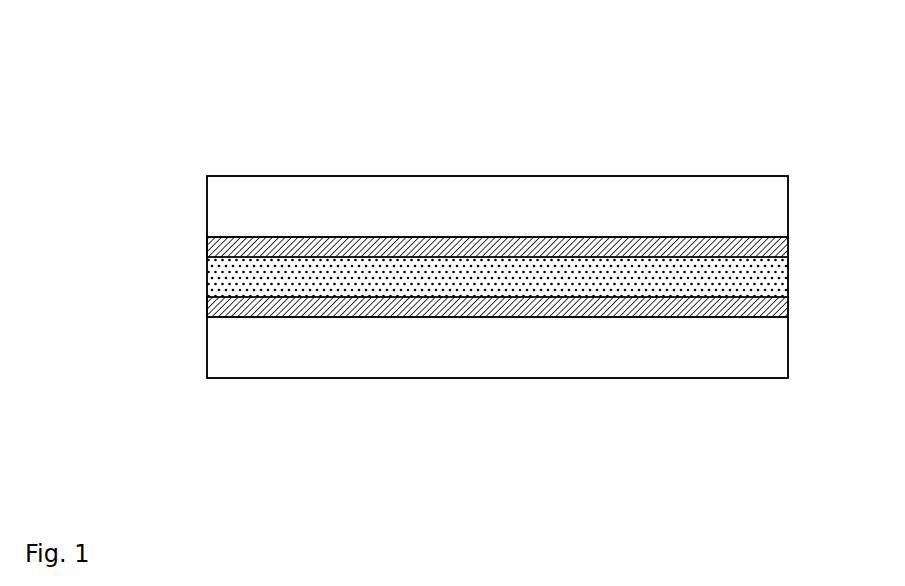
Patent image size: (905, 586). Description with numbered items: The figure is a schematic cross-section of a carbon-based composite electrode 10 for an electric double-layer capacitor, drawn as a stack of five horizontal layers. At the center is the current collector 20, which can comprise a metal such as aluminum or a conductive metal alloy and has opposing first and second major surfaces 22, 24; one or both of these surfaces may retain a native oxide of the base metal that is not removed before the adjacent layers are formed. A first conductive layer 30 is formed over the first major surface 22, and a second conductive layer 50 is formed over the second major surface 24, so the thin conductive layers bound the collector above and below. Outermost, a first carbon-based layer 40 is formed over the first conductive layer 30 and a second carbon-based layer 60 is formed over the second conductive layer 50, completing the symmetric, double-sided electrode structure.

The carbon-based composite electrode 10 is at (206, 117).
The current collector 20 is at (497, 277).
The first major surface 22 is at (789, 244).
The second major surface 24 is at (787, 311).
The first conductive layer 30 is at (208, 240).
The first carbon-based layer 40 is at (497, 206).
The second conductive layer 50 is at (208, 317).
The second carbon-based layer 60 is at (497, 347).